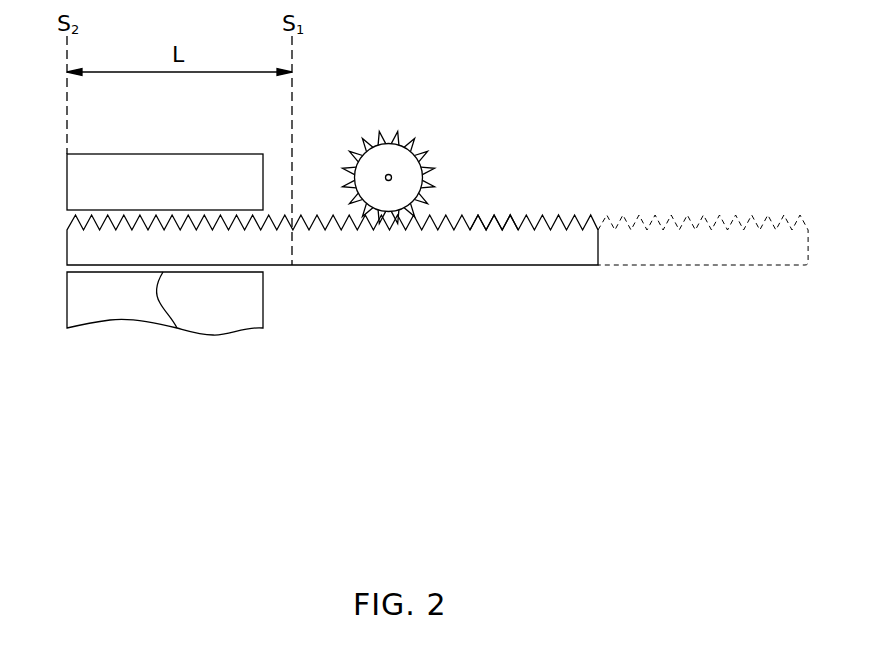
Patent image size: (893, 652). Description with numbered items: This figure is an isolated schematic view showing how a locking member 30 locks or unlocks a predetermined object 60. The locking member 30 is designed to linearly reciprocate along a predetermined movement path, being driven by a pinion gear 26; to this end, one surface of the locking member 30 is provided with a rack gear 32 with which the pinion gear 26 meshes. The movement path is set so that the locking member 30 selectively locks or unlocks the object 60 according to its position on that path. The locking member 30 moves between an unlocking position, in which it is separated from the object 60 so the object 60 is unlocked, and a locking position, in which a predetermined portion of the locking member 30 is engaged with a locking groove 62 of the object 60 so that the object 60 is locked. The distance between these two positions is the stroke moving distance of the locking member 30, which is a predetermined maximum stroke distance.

The pinion gear 26 is at (392, 150).
The locking member 30 is at (378, 252).
The rack gear 32 is at (493, 215).
The object 60 is at (67, 298).
The locking groove 62 is at (177, 328).